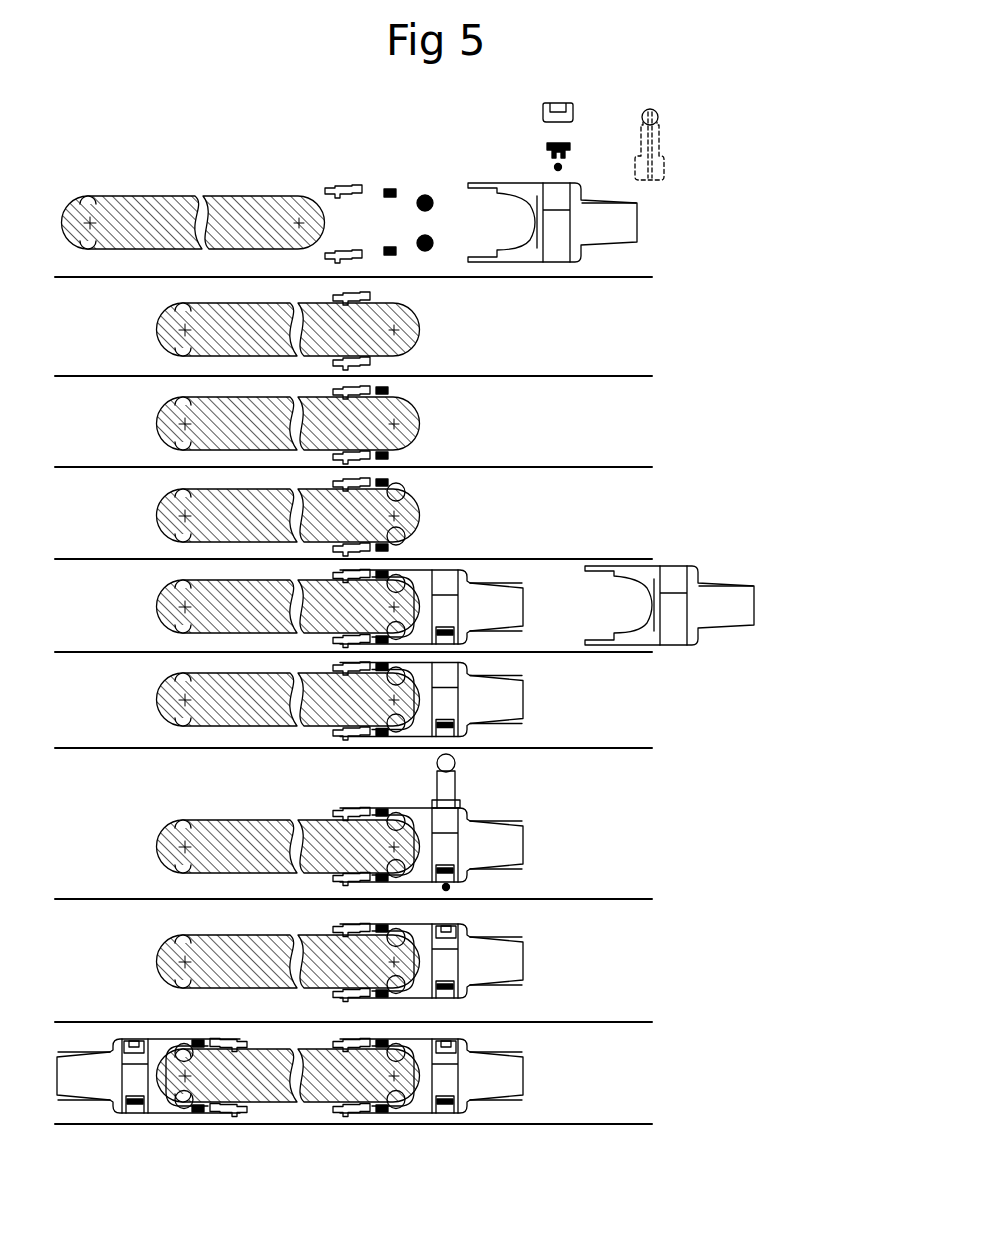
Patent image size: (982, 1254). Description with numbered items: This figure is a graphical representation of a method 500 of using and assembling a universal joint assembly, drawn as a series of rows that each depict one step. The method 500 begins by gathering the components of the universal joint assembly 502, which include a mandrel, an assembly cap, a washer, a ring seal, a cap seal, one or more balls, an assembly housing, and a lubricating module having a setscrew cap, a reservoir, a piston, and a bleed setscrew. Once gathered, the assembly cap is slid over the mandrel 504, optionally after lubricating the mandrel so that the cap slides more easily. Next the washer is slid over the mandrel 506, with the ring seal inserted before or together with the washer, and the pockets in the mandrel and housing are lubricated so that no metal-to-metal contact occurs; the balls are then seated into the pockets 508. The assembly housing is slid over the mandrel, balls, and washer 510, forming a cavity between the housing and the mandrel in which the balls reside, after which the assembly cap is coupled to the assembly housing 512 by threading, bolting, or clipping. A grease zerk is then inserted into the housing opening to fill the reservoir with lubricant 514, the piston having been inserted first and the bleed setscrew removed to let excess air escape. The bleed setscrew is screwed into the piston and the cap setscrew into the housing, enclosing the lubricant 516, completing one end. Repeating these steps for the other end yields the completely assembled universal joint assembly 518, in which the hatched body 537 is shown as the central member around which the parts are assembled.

The method 500 is at (233, 137).
The gathering the components of the universal joint assembly 502 is at (692, 190).
The sliding the assembly cap over the mandrel 504 is at (443, 331).
The sliding the washer over the mandrel 506 is at (443, 425).
The seating the balls into the pockets 508 is at (443, 517).
The sliding the assembly housing over the mandrel, balls, and washer 510 is at (769, 572).
The coupling the assembly cap to the assembly housing 512 is at (443, 701).
The filling the reservoir with lubricant 514 is at (434, 822).
The enclosing the lubricant in the reservoir 516 is at (443, 963).
The completely assembled universal joint assembly 518 is at (393, 1078).
The insulating body 537 is at (178, 820).